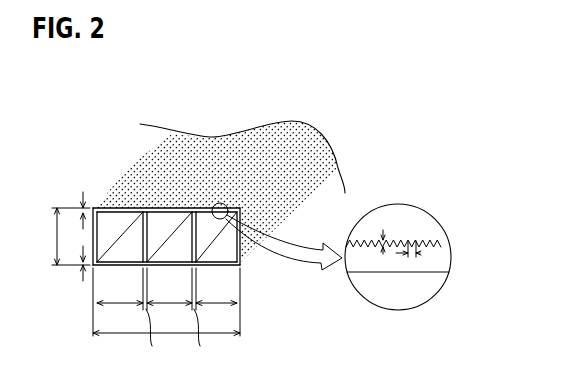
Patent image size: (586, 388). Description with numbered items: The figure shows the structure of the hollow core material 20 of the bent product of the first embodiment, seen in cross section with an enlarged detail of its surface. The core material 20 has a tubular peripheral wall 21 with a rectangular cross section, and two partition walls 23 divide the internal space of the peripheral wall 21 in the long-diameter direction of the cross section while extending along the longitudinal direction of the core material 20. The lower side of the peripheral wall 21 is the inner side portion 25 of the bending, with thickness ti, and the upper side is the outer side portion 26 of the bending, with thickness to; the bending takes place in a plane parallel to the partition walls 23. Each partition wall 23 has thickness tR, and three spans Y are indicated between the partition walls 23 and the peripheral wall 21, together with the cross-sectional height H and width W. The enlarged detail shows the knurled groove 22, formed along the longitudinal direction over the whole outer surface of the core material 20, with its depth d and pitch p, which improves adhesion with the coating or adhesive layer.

The core material 20 is at (259, 215).
The peripheral wall 21 is at (104, 207).
The groove 22 is at (456, 216).
The partition wall 23 is at (138, 225).
The inner side portion 25 is at (223, 274).
The outer side portion 26 is at (206, 147).